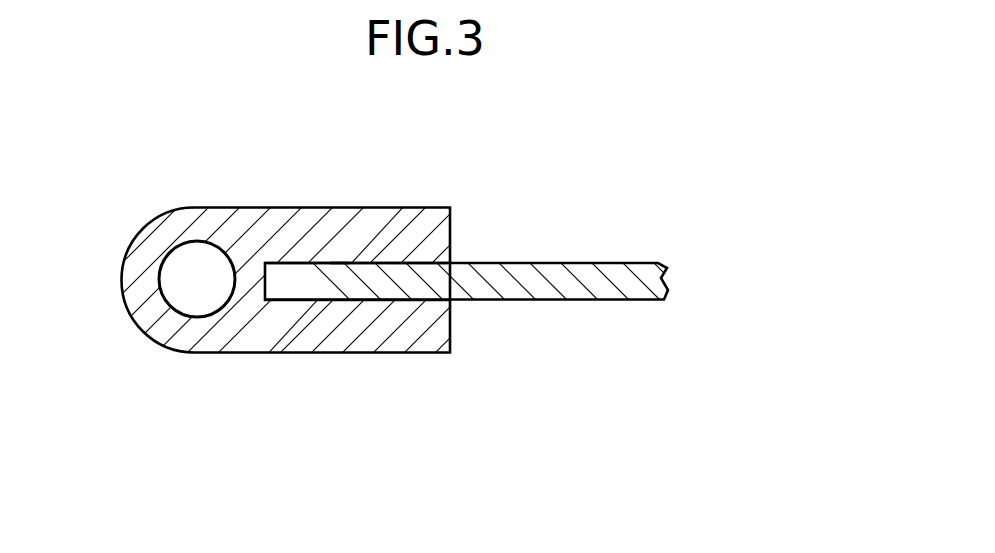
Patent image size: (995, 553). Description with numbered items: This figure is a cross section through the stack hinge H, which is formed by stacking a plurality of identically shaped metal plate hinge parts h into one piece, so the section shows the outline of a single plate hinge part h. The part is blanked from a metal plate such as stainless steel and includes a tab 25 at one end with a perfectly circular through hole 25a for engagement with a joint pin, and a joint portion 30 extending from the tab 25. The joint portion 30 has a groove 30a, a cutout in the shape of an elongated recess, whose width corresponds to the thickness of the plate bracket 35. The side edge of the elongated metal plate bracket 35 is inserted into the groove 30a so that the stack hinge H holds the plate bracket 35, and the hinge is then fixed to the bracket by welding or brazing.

The tab 25 is at (192, 332).
The through hole 25a is at (161, 276).
The joint portion 30 is at (320, 330).
The groove 30a is at (332, 266).
The plate bracket 35 is at (543, 263).
The stack hinge H is at (192, 170).
The plate hinge part h is at (183, 422).